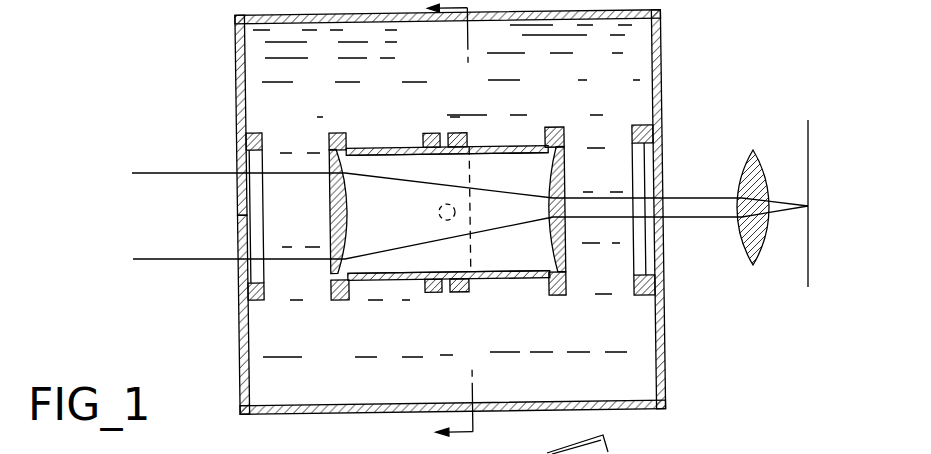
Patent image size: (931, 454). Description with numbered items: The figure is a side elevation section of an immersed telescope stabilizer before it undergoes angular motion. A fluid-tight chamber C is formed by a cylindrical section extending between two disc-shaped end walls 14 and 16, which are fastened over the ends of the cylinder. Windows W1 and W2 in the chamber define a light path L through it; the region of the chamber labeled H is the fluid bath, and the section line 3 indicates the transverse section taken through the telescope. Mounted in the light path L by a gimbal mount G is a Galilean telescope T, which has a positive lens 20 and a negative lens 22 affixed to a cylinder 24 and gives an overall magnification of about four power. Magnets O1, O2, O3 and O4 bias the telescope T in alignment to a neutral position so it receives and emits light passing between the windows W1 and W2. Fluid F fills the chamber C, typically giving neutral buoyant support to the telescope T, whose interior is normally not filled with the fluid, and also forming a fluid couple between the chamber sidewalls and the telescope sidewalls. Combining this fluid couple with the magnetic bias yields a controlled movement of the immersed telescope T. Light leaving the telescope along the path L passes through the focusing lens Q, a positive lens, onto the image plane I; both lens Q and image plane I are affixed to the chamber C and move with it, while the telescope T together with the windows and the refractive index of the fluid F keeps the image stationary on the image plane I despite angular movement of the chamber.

The chamber C is at (660, 58).
The housing wall H is at (236, 56).
The end wall 14 is at (239, 377).
The end wall 16 is at (663, 377).
The window W1 is at (238, 190).
The window W2 is at (660, 150).
The magnet O1 is at (255, 132).
The magnet O2 is at (338, 132).
The magnet O3 is at (561, 127).
The magnet O4 is at (632, 125).
The positive lens 20 is at (337, 203).
The negative lens 22 is at (568, 170).
The cylinder 24 is at (393, 147).
The telescope T is at (523, 280).
The gimbal mount G is at (447, 293).
The section line 3- 3 is at (441, 227).
The fluid F is at (308, 373).
The light path L is at (219, 266).
The focusing lens Q is at (748, 257).
The image plane I is at (808, 262).